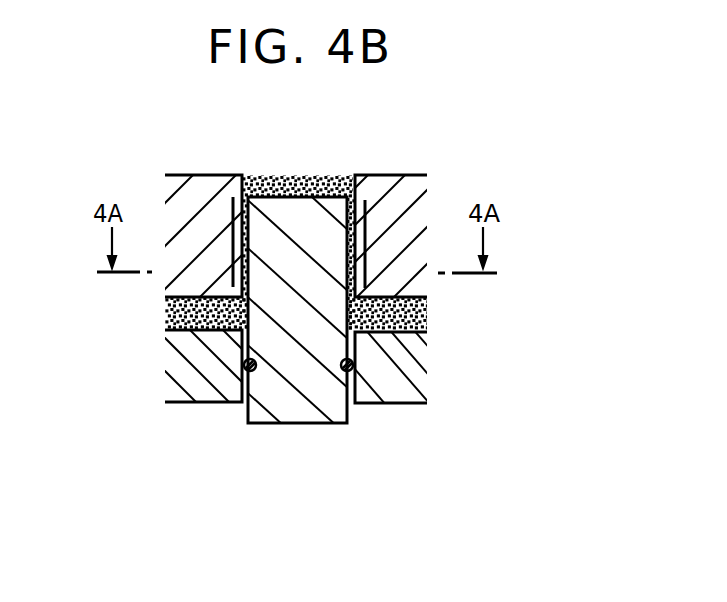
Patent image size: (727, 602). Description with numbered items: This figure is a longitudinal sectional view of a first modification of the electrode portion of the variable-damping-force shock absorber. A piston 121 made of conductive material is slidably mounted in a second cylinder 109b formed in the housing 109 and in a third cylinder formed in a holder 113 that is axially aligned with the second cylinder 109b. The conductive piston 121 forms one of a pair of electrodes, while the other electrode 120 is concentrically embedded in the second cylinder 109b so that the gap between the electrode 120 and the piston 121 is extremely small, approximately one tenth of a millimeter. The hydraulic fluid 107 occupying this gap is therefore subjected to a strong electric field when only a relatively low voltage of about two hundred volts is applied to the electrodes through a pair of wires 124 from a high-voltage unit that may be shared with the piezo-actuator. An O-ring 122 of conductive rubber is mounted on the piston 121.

The hydraulic fluid 107 is at (310, 190).
The housing 109 is at (186, 194).
The second cylinder 109b is at (352, 188).
The holder 113 is at (203, 393).
The electrode 120 is at (240, 212).
The piston 121 is at (302, 410).
The O-ring 122 is at (355, 343).
The wires 124 is at (355, 201).